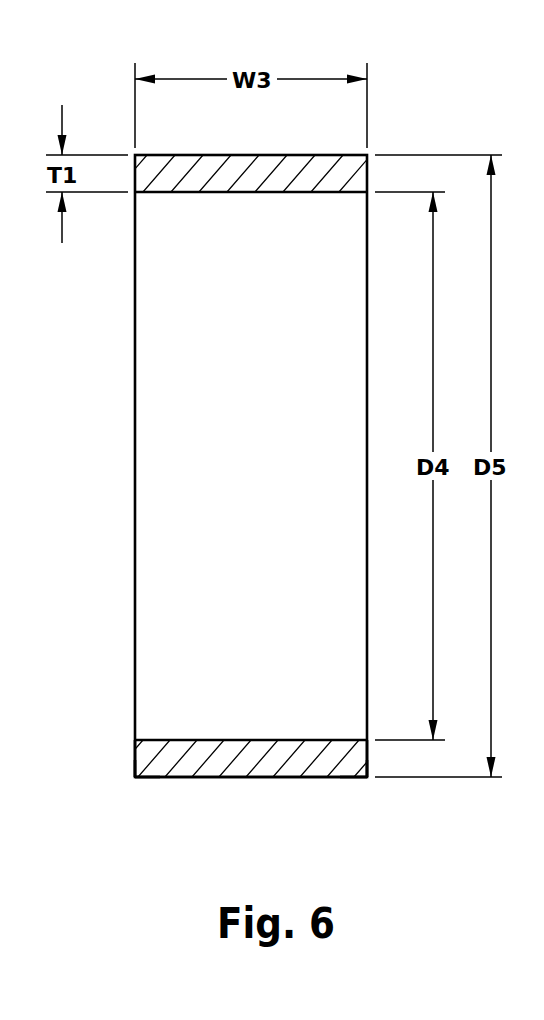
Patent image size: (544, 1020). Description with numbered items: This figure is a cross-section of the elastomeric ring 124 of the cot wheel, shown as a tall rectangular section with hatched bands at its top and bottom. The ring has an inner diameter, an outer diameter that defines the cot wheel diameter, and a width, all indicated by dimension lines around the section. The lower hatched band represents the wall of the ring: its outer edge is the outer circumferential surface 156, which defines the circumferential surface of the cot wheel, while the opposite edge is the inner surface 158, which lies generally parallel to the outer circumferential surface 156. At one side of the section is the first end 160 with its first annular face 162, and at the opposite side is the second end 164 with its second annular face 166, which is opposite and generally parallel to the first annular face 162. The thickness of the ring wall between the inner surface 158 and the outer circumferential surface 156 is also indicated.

The elastomeric ring 124 is at (424, 112).
The outer circumferential surface 156 is at (240, 778).
The inner surface 158 is at (232, 740).
The first end 160 is at (100, 786).
The first annular face 162 is at (135, 758).
The second end 164 is at (417, 790).
The second annular face 166 is at (368, 757).